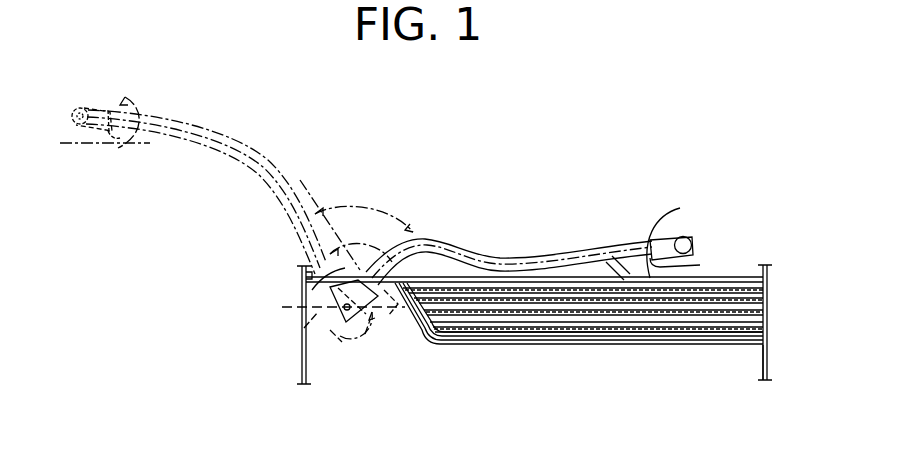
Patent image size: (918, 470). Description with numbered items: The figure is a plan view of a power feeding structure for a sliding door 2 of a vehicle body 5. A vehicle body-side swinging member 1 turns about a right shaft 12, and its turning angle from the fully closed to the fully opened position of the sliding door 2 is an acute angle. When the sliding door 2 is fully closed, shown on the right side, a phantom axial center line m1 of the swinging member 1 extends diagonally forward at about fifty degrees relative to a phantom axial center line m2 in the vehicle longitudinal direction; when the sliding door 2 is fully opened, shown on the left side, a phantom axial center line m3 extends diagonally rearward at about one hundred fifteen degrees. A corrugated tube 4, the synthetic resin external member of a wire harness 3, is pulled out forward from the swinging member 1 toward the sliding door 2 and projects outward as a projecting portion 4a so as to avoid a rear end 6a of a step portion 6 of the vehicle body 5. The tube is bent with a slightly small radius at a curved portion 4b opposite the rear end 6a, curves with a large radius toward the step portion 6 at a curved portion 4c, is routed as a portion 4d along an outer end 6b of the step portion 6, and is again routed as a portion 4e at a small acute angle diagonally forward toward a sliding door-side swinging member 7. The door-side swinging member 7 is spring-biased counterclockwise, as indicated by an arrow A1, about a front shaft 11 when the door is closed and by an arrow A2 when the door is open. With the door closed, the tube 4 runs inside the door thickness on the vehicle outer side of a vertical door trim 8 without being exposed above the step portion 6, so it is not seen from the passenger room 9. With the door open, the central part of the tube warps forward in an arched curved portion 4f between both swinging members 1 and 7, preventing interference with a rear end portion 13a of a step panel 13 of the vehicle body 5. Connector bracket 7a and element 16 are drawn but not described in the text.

The swinging member 1 is at (335, 288).
The sliding door 2 is at (770, 270).
The wire harness 3 is at (530, 255).
The corrugated tube 4 is at (548, 258).
The projecting portion 4a is at (330, 296).
The curved portion 4b is at (423, 240).
The curved portion 4c is at (490, 257).
The routed portion 4d is at (537, 287).
The corrugated tube portion 4e is at (648, 278).
The curved portion 4f is at (287, 162).
The vehicle body 5 is at (773, 360).
The step portion 6 is at (572, 320).
The rear end 6a is at (443, 293).
The outer end 6b is at (582, 277).
The sliding door-side swinging member 7 is at (672, 234).
The connector bracket 7a is at (687, 262).
The door trim 8 is at (768, 302).
The passenger room 9 is at (630, 405).
The shaft 11 is at (694, 243).
The shaft 12 is at (347, 323).
The step panel 13 is at (302, 340).
The rear end portion 13a is at (302, 268).
The bracket 16 is at (322, 278).
The phantom axial center line m1 is at (420, 226).
The phantom axial center line m2 is at (383, 305).
The phantom axial center line m3 is at (292, 165).
The arrow A1 is at (665, 235).
The arrow A2 is at (112, 118).